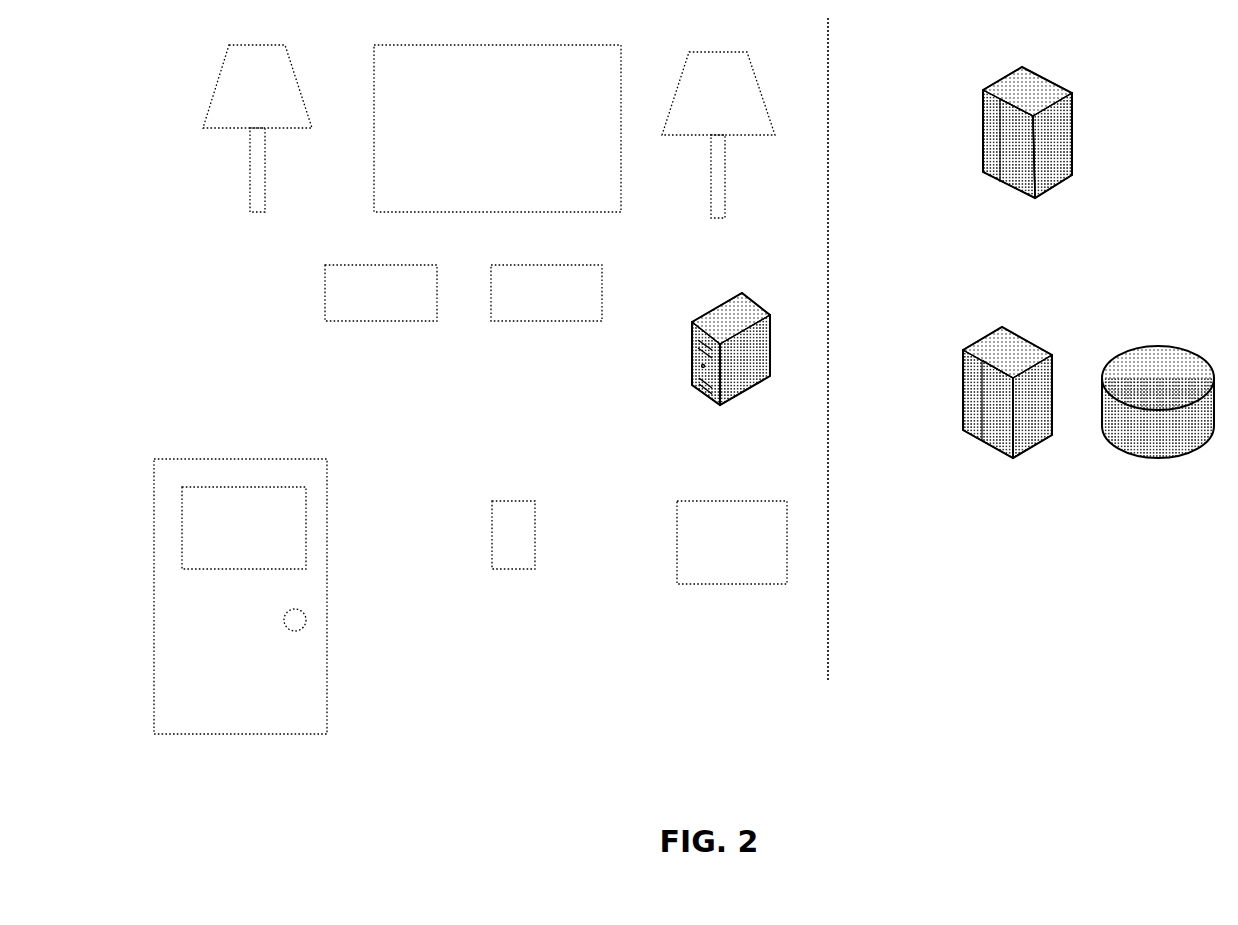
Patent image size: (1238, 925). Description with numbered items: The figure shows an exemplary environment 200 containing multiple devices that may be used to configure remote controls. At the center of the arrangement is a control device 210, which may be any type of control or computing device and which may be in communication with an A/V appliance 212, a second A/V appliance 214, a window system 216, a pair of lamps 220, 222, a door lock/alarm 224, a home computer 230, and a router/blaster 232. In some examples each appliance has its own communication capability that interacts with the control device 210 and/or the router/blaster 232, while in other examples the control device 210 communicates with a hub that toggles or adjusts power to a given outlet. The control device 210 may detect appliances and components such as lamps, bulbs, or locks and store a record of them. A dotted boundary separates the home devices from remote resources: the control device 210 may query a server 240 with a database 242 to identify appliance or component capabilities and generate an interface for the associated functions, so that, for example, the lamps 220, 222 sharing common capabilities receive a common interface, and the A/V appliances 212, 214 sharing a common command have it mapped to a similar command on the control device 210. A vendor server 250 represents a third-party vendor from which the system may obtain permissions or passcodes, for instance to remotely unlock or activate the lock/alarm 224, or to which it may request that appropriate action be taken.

The environment 200 is at (715, 792).
The control device 210 is at (513, 535).
The A/V appliance 212 is at (381, 293).
The A/V appliance 214 is at (546, 293).
The window system 216 is at (497, 128).
The lamp 220 is at (718, 135).
The lamp 222 is at (257, 128).
The door lock/alarm 224 is at (263, 596).
The home computer 230 is at (731, 357).
The router/blaster 232 is at (732, 542).
The server 240 is at (1004, 399).
The database 242 is at (1158, 416).
The vendor server 250 is at (1024, 139).